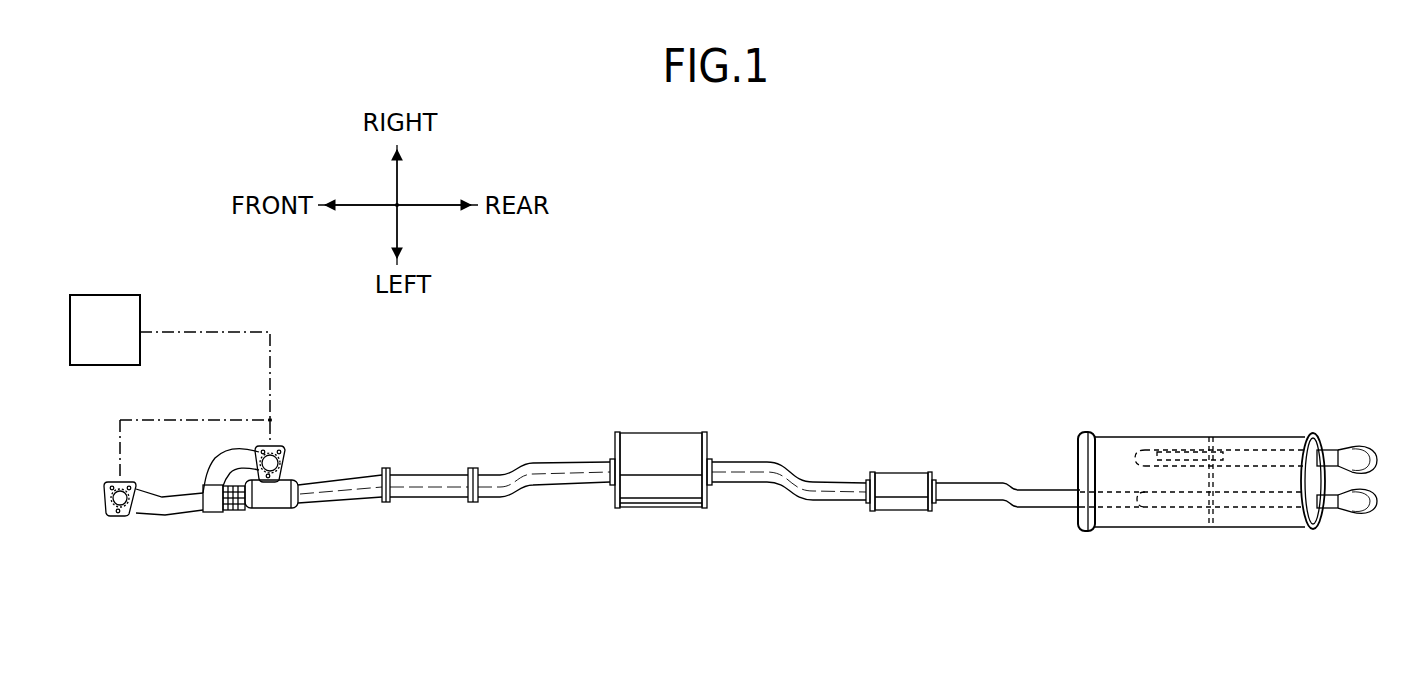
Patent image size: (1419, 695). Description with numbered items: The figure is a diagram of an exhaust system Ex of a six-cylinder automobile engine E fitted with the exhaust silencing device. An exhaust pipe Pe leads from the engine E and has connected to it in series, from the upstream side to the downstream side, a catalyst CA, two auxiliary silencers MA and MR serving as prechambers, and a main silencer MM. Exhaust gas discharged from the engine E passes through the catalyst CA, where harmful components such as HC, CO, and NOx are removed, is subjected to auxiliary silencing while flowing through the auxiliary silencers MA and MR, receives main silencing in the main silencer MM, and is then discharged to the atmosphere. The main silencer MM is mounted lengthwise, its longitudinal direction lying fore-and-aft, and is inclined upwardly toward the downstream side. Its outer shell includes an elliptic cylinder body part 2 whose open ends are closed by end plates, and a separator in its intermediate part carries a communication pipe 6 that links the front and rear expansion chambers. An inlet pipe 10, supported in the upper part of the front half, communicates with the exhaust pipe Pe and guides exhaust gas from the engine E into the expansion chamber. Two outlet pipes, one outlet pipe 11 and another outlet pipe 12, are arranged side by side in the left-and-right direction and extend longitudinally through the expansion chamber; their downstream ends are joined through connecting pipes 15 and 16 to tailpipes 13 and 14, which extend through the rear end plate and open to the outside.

The six-cylinder engine E is at (96, 345).
The exhaust system Ex is at (518, 445).
The catalyst CA is at (268, 500).
The exhaust pipe Pe is at (546, 494).
The auxiliary silencer MA is at (658, 490).
The auxiliary silencer MR is at (905, 503).
The main silencer MM is at (1233, 506).
The elliptic cylinder body part 2 is at (1078, 498).
The communication pipe 6 is at (1178, 450).
The inlet pipe 10 is at (1117, 505).
The one outlet pipe 11 is at (1265, 507).
The other outlet pipe 12 is at (1262, 452).
The tailpipe 13 is at (1363, 509).
The tailpipe 14 is at (1358, 452).
The connecting pipe 15 is at (1332, 505).
The connecting pipe 16 is at (1330, 455).